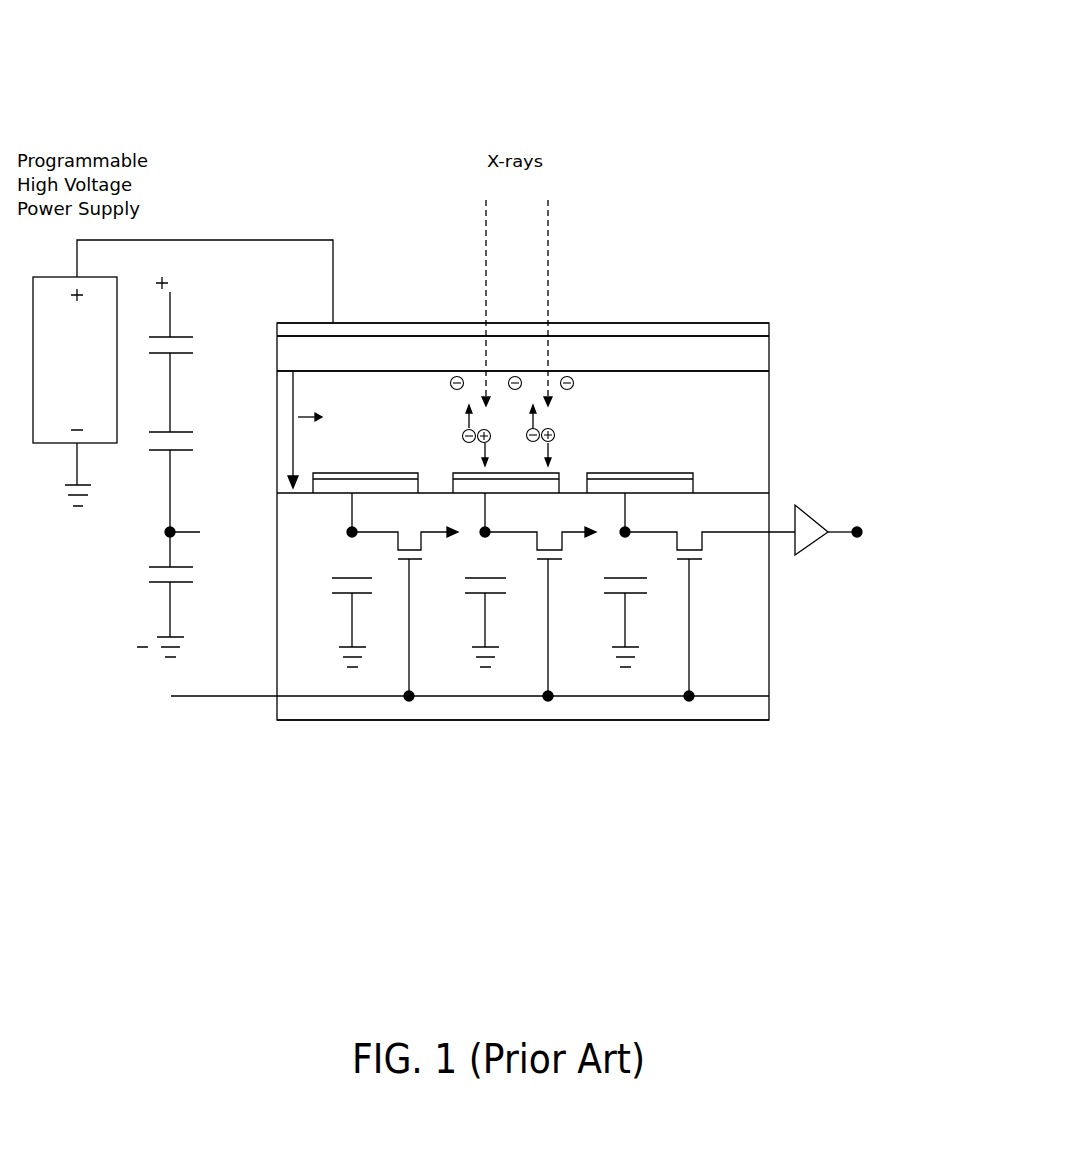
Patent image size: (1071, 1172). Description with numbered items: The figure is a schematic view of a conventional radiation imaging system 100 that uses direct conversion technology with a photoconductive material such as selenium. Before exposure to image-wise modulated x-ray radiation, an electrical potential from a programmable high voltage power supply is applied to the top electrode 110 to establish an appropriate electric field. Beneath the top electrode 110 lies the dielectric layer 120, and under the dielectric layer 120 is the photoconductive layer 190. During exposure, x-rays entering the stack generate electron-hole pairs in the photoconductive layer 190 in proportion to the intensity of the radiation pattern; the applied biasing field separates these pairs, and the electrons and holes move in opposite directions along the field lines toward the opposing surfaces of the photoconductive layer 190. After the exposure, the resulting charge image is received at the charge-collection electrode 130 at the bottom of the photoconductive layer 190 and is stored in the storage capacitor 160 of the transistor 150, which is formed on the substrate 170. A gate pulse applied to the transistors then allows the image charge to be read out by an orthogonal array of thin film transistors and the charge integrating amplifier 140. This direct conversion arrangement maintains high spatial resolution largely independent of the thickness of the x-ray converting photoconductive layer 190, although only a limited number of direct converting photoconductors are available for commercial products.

The radiation imaging system 100 is at (652, 71).
The top electrode 110 is at (733, 328).
The dielectric layer 120 is at (752, 357).
The photoconductive layer 190 is at (752, 418).
The charge-collection electrode 130 is at (693, 485).
The charge integrating amplifier 140 is at (807, 540).
The transistor 150 is at (712, 547).
The storage capacitor 160 is at (653, 587).
The substrate 170 is at (717, 708).